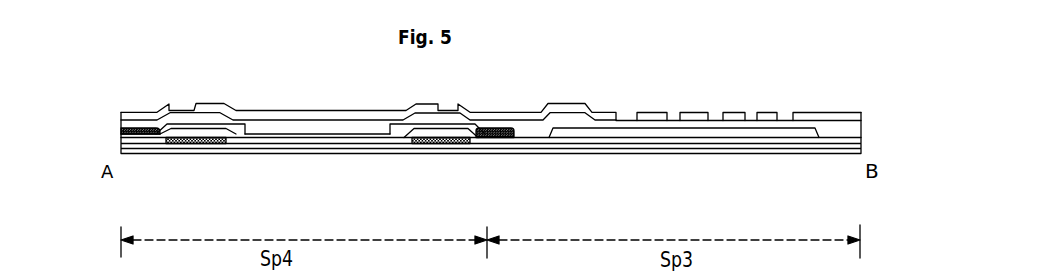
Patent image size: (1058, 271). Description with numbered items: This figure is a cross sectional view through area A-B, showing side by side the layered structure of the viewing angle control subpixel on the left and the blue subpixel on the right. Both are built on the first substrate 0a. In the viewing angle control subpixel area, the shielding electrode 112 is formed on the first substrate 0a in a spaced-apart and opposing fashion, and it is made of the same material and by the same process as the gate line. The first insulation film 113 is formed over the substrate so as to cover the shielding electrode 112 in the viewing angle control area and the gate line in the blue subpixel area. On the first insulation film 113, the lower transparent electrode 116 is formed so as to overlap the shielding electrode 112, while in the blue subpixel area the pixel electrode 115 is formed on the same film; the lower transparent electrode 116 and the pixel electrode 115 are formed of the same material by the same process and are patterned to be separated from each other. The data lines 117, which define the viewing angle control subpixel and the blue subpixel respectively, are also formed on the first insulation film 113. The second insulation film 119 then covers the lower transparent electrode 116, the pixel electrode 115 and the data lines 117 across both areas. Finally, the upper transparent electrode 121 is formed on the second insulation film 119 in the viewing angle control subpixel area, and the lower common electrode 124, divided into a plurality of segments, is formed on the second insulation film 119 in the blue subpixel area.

The first substrate 0a is at (121, 148).
The shielding electrode 112 is at (197, 144).
The first insulation film 113 is at (300, 138).
The pixel electrode 115 is at (660, 132).
The lower transparent electrode 116 is at (238, 134).
The data line 117 is at (146, 135).
The second insulation film 119 is at (351, 131).
The upper transparent electrode 121 is at (196, 103).
The lower common electrode 124 is at (862, 113).